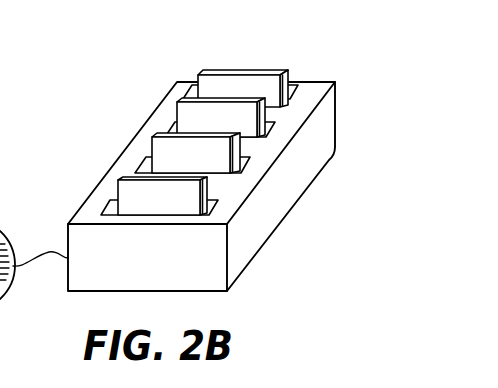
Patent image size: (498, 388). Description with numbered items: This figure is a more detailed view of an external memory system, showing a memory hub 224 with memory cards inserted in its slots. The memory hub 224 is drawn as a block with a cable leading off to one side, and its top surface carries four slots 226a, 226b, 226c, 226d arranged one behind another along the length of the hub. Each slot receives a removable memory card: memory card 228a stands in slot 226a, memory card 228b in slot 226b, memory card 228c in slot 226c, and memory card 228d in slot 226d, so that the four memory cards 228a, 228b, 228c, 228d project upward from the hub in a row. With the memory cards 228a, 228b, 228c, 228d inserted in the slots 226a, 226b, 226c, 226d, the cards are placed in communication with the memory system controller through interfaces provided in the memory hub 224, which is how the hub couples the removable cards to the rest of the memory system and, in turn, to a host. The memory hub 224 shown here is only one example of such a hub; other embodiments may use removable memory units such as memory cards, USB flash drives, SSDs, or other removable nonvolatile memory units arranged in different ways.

The memory hub 224 is at (95, 278).
The slot 226a is at (290, 83).
The slot 226b is at (275, 123).
The slot 226c is at (250, 158).
The slot 226d is at (218, 201).
The memory card 228a is at (197, 77).
The memory card 228b is at (175, 112).
The memory card 228c is at (150, 145).
The memory card 228d is at (118, 186).